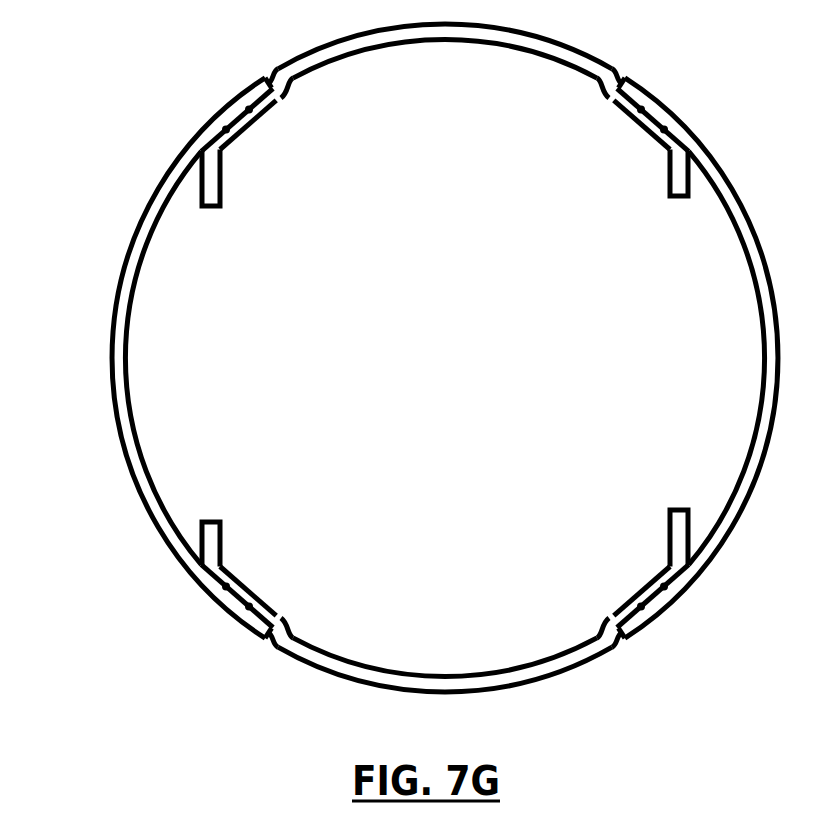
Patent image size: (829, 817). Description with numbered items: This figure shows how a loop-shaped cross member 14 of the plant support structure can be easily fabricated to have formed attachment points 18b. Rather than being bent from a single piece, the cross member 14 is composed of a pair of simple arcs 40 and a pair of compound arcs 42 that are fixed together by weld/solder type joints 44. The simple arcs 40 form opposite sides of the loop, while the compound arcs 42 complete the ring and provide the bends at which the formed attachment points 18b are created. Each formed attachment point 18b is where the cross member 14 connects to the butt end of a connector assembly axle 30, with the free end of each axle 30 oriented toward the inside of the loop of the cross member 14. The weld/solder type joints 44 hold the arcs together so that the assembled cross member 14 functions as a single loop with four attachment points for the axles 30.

The cross member 14 is at (400, 358).
The formed attachment point 18b is at (670, 165).
The connector assembly axle 30 is at (686, 197).
The simple arc 40 is at (126, 333).
The compound arc 42 is at (388, 50).
The weld/solder type joint 44 is at (228, 133).